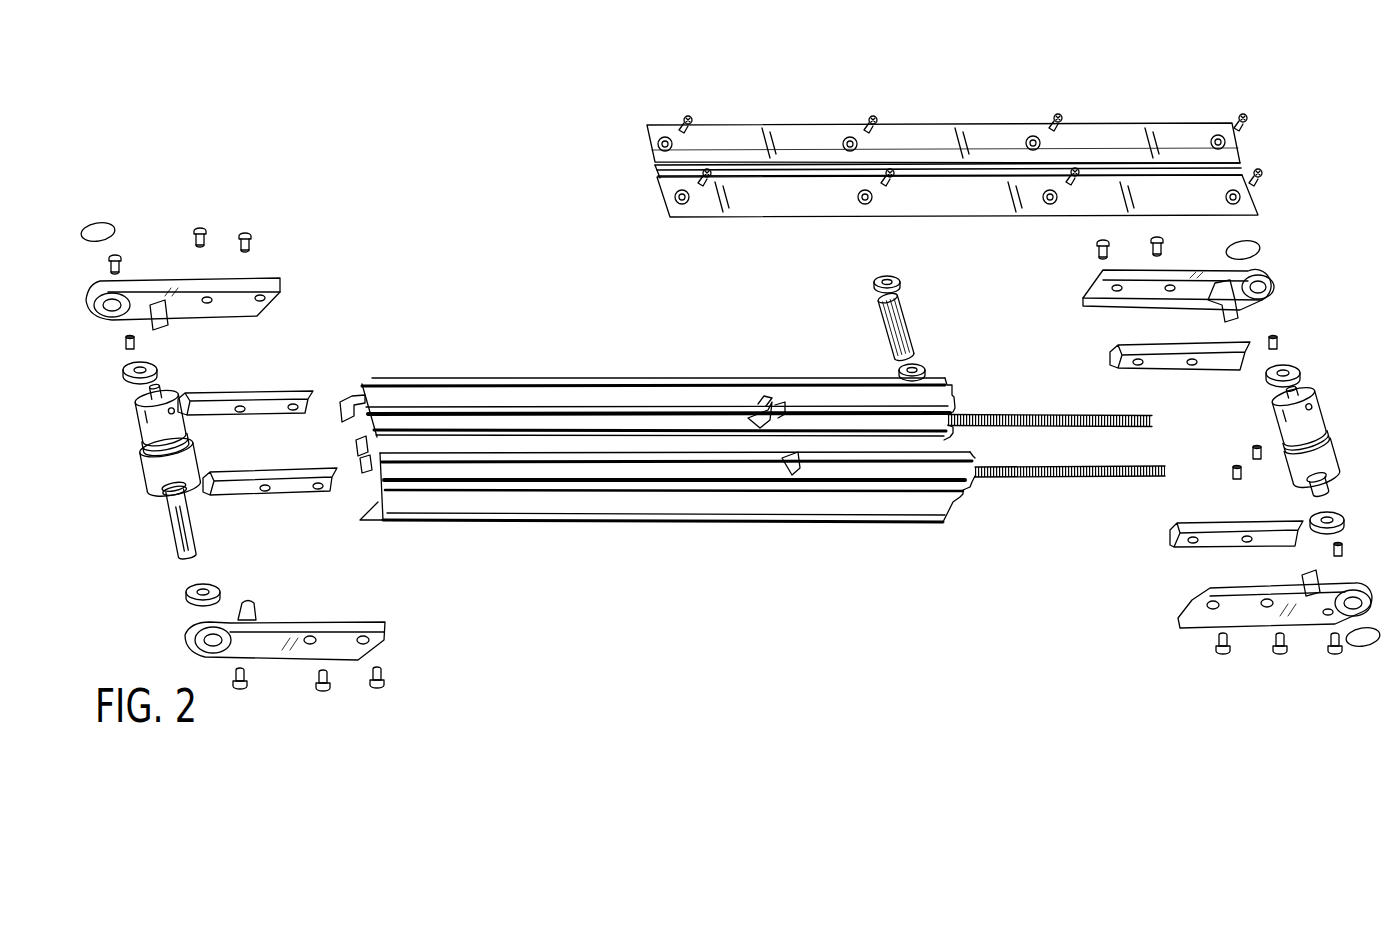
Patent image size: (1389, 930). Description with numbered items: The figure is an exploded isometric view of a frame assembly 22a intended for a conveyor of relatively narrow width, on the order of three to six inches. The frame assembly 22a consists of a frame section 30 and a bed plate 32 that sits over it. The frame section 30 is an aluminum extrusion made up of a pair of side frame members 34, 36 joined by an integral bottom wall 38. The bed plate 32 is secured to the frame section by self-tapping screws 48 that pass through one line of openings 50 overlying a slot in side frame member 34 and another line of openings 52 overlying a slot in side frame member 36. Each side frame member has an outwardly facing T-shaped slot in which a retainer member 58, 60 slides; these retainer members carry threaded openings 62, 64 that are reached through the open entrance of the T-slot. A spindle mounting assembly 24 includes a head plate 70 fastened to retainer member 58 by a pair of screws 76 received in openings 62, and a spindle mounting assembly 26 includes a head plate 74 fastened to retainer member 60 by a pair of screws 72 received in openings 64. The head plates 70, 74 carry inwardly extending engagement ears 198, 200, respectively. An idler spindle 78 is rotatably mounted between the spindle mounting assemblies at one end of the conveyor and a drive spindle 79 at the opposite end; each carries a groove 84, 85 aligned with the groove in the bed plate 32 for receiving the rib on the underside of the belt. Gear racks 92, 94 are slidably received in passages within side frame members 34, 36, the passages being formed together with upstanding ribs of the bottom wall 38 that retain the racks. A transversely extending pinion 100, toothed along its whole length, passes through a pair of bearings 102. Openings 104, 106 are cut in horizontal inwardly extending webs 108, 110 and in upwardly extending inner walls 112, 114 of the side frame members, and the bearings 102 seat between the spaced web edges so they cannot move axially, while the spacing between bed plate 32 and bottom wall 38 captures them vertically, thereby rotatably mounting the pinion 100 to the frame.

The frame assembly 22a is at (680, 633).
The spindle mounting assembly 24 is at (780, 495).
The spindle mounting assembly 26 is at (731, 445).
The frame section 30 is at (742, 469).
The bed plate 32 is at (776, 122).
The side frame member 34 is at (577, 380).
The side frame member 36 is at (543, 523).
The bottom wall 38 is at (358, 460).
The self-tapping screws 48 is at (691, 115).
The openings 50 is at (657, 143).
The openings 52 is at (675, 199).
The retainer member 58 is at (268, 497).
The retainer member 60 is at (290, 390).
The threaded openings 62 is at (1136, 365).
The threaded openings 64 is at (1191, 543).
The head plate 70 is at (287, 665).
The screws 72 is at (375, 690).
The head plate 74 is at (157, 275).
The screws 76 is at (245, 231).
The idler spindle 78 is at (1338, 408).
The drive spindle 79 is at (138, 475).
The groove 84 is at (1328, 440).
The groove 85 is at (142, 422).
The gear rack 92 is at (1088, 478).
The gear rack 94 is at (1040, 414).
The pinion 100 is at (907, 322).
The bearings 102 is at (903, 278).
The opening 104 is at (762, 418).
The opening 106 is at (790, 476).
The horizontal web 108 is at (655, 430).
The horizontal web 110 is at (715, 457).
The inner wall 112 is at (808, 408).
The inner wall 114 is at (888, 462).
The engagement ear 198 is at (252, 604).
The engagement ear 200 is at (168, 316).